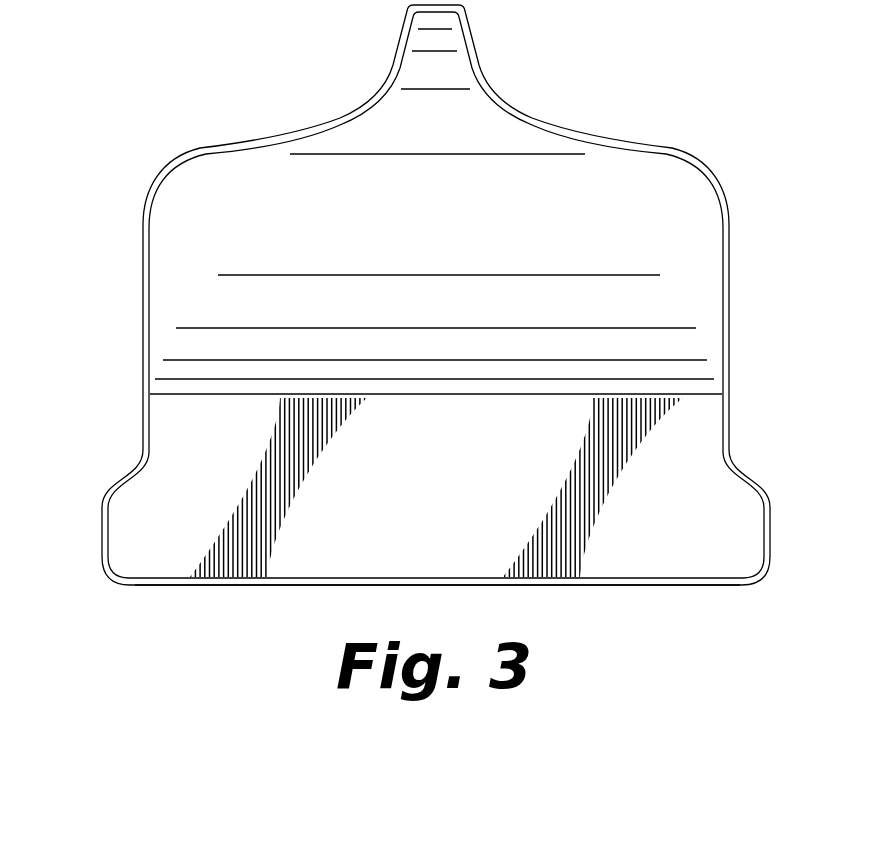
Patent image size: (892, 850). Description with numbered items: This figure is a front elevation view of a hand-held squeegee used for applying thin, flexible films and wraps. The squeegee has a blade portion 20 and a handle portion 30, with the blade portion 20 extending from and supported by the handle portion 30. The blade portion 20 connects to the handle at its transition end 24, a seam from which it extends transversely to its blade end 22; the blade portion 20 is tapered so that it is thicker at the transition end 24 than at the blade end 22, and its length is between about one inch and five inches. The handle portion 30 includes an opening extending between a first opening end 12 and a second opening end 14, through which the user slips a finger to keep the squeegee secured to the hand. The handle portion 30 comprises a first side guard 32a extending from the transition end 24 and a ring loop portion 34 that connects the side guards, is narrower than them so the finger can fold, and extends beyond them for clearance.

The first opening end 12 is at (135, 297).
The second opening end 14 is at (740, 296).
The blade portion 20 is at (811, 398).
The blade end 22 is at (157, 587).
The transition end 24 is at (205, 397).
The handle portion 30 is at (811, 392).
The first side guard 32a is at (452, 234).
The ring loop portion 34 is at (442, 68).